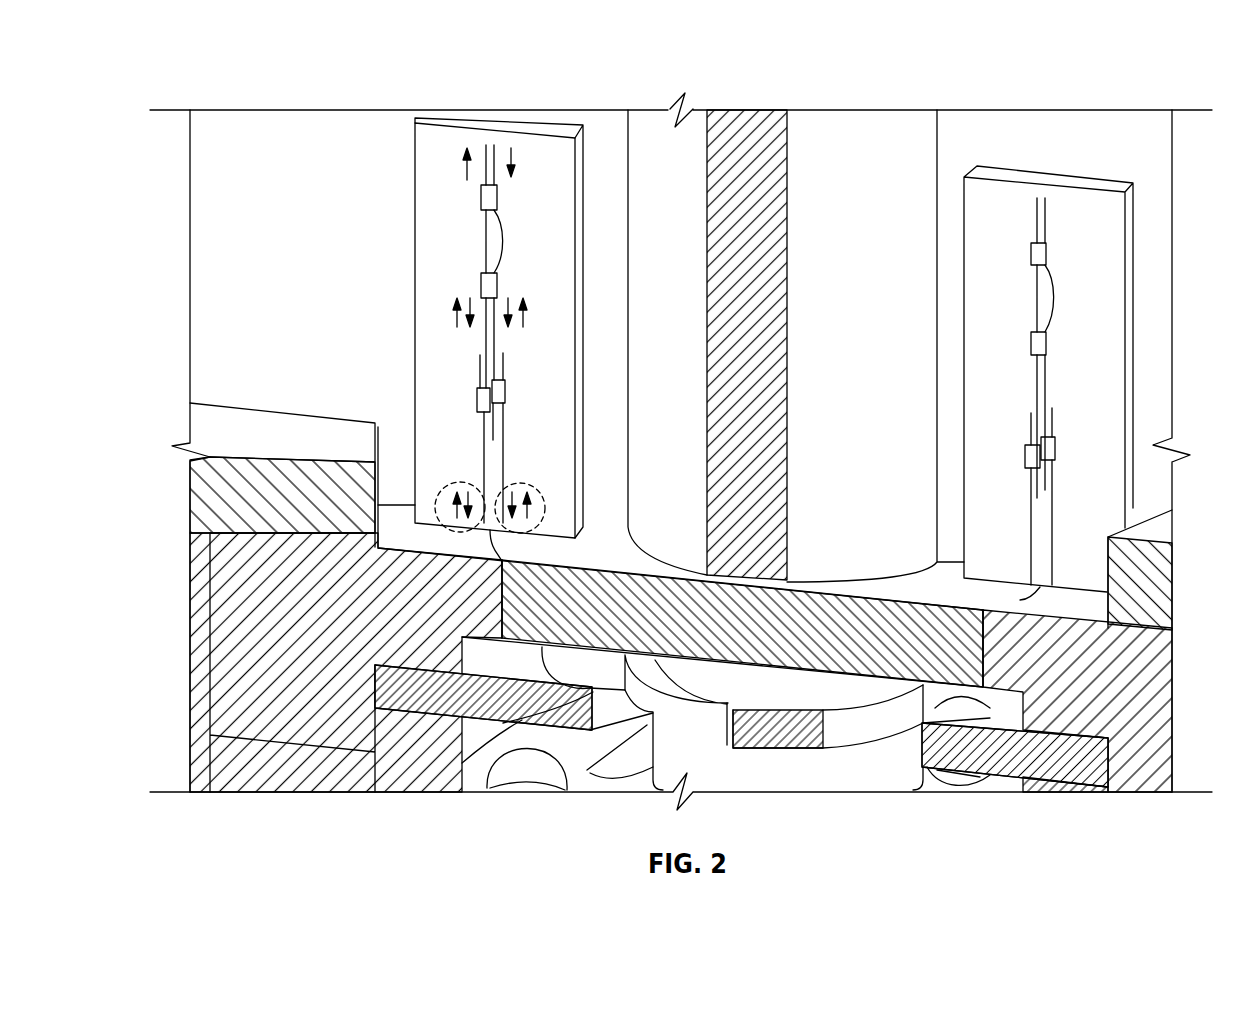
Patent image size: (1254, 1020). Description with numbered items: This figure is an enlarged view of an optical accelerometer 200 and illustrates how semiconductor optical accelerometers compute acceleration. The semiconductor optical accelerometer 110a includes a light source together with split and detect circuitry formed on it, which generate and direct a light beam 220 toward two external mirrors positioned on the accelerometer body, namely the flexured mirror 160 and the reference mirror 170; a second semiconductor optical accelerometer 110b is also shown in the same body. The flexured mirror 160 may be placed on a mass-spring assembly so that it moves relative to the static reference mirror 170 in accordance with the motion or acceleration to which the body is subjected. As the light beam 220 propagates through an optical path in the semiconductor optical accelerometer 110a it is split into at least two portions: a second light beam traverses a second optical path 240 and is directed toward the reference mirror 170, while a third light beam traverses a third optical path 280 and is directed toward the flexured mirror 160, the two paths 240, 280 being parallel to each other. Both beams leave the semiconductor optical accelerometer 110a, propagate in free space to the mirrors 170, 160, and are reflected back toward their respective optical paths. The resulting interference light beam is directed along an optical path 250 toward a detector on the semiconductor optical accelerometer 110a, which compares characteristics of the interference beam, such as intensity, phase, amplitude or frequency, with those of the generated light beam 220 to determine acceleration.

The sensor system 200 is at (231, 78).
The semiconductor optical accelerometer 110a is at (580, 150).
The second panel 110b is at (1092, 253).
The light beam 220 is at (511, 158).
The third optical path 250 is at (467, 170).
The second optical path 240 is at (463, 482).
The third optical path 280 is at (533, 483).
The reference mirror 170 is at (428, 537).
The flexured mirror 160 is at (550, 550).